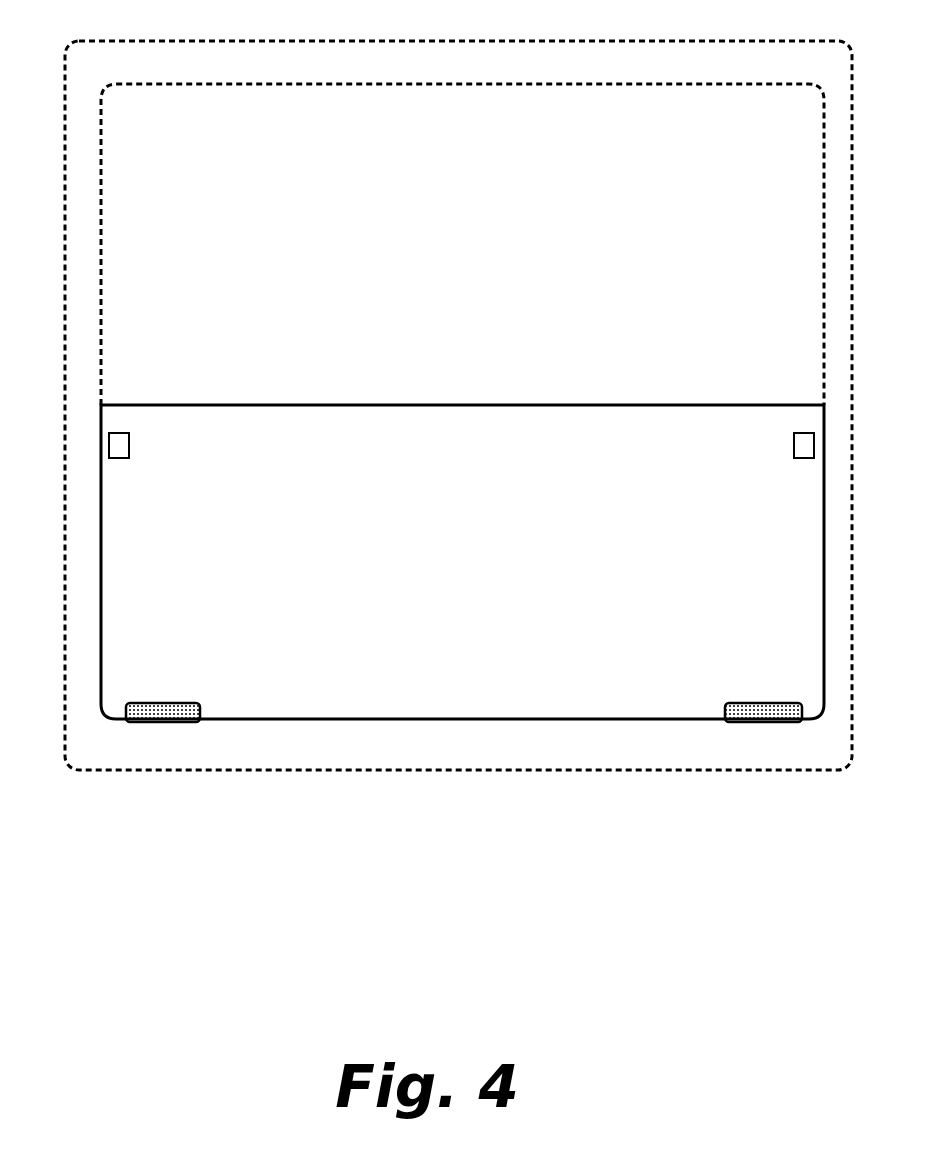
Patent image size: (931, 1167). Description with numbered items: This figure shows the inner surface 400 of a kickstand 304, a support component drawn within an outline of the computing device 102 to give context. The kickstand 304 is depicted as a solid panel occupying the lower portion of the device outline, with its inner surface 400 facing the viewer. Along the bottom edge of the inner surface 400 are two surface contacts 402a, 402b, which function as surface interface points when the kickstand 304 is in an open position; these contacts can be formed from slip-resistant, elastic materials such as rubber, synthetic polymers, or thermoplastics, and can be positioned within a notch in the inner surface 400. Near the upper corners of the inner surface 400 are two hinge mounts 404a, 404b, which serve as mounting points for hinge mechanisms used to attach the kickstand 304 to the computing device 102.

The computing device 102 is at (96, 41).
The kickstand 304 is at (110, 532).
The inner surface 400 is at (462, 559).
The surface contact 402a is at (187, 703).
The surface contact 402b is at (737, 703).
The hinge mount 404a is at (120, 452).
The hinge mount 404b is at (801, 455).